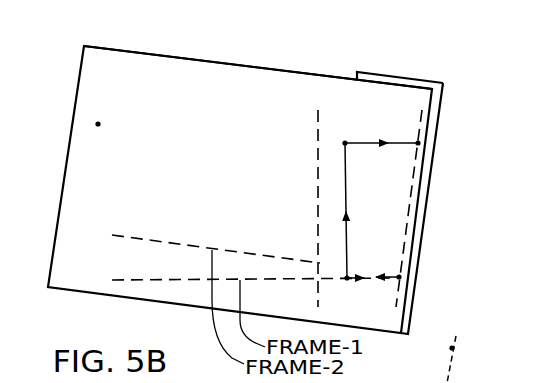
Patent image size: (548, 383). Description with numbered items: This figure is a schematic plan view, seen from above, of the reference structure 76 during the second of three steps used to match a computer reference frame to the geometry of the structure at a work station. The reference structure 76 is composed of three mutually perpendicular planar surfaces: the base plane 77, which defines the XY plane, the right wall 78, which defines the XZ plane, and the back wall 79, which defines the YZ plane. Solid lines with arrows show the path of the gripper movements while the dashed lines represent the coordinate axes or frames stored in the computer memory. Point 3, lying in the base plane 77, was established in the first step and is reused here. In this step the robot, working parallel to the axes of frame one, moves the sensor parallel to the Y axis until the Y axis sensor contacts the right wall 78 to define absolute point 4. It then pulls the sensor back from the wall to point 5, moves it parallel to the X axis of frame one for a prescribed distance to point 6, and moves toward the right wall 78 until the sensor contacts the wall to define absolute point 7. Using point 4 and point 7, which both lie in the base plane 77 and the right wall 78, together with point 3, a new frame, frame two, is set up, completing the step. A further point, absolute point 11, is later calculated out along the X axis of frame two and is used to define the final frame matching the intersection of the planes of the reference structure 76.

The reference structure 76 is at (57, 148).
The base plane 77 is at (233, 80).
The right wall 78 is at (428, 212).
The back wall 79 is at (390, 74).
The absolute point 3 is at (98, 109).
The absolute point 4 is at (389, 289).
The absolute point 5 is at (352, 225).
The absolute point 6 is at (377, 131).
The absolute point 7 is at (412, 129).
The absolute point 11 is at (466, 358).